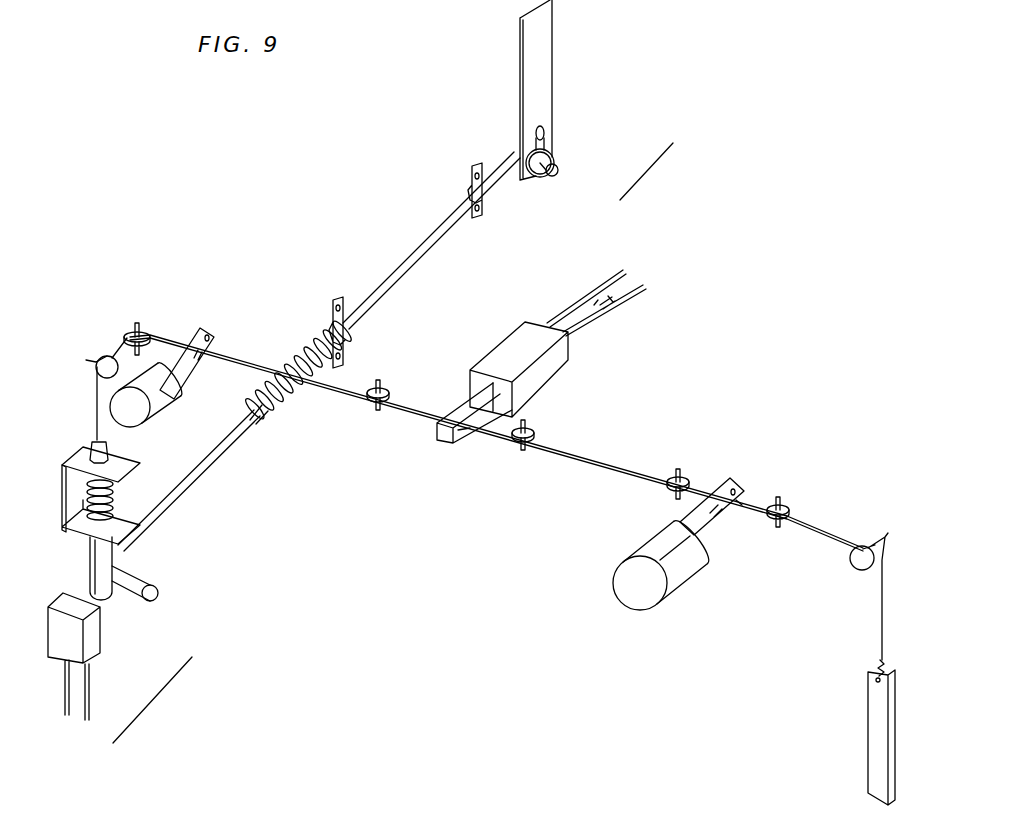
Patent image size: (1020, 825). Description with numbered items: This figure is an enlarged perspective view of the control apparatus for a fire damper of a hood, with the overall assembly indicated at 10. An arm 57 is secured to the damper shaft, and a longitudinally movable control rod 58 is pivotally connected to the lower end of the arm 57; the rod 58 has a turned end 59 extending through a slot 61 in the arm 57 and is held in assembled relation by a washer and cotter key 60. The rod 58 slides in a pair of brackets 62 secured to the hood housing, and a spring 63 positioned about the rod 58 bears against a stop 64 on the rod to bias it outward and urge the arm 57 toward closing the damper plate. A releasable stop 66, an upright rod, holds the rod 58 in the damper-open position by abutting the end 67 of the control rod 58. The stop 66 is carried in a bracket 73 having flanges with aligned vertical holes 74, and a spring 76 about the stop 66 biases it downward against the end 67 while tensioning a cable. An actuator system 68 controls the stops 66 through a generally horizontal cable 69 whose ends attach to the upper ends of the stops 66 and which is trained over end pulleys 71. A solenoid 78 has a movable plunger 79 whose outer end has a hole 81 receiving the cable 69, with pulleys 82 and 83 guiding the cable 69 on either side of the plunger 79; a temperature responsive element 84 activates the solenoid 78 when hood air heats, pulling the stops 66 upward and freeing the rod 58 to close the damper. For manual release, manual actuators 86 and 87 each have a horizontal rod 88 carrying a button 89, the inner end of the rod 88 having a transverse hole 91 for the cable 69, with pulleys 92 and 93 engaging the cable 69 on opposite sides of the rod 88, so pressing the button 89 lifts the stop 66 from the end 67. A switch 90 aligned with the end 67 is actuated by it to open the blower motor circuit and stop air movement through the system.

The system / apparatus 10 is at (680, 152).
The arm 57 is at (543, 58).
The control rod 58 is at (413, 258).
The turned end 59 is at (557, 170).
The washer and cotter key 60 is at (548, 152).
The slot 61 is at (544, 135).
The brackets 62 is at (486, 192).
The spring 63 is at (312, 350).
The stop 64 is at (263, 424).
The releasable stop 66 is at (98, 550).
The end of control rod 67 is at (158, 593).
The actuator system 68 is at (362, 520).
The cable 69 is at (607, 470).
The end pulleys 71 is at (128, 332).
The bracket 73 is at (122, 460).
The vertical holes 74 is at (87, 463).
The spring 76 is at (112, 493).
The solenoid 78 is at (508, 347).
The plunger 79 is at (435, 433).
The hole 81 is at (468, 432).
The pulley 82 is at (400, 376).
The pulley 83 is at (533, 432).
The temperature responsive element 84 is at (613, 303).
The manual actuator 86 is at (695, 586).
The manual actuator 87 is at (176, 407).
The horizontal rod 88 is at (710, 533).
The button 89 is at (617, 585).
The switch 90 is at (92, 637).
The transverse hole 91 is at (740, 502).
The pulley 92 is at (687, 475).
The pulley 93 is at (792, 508).